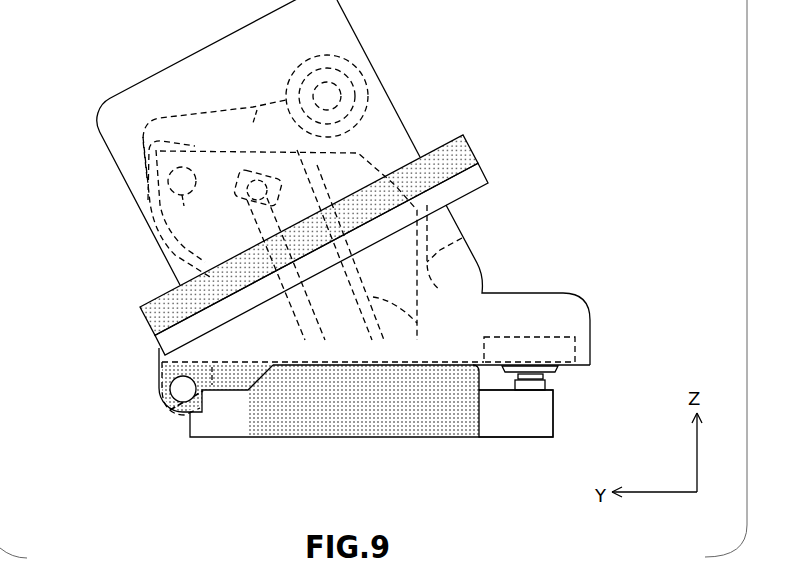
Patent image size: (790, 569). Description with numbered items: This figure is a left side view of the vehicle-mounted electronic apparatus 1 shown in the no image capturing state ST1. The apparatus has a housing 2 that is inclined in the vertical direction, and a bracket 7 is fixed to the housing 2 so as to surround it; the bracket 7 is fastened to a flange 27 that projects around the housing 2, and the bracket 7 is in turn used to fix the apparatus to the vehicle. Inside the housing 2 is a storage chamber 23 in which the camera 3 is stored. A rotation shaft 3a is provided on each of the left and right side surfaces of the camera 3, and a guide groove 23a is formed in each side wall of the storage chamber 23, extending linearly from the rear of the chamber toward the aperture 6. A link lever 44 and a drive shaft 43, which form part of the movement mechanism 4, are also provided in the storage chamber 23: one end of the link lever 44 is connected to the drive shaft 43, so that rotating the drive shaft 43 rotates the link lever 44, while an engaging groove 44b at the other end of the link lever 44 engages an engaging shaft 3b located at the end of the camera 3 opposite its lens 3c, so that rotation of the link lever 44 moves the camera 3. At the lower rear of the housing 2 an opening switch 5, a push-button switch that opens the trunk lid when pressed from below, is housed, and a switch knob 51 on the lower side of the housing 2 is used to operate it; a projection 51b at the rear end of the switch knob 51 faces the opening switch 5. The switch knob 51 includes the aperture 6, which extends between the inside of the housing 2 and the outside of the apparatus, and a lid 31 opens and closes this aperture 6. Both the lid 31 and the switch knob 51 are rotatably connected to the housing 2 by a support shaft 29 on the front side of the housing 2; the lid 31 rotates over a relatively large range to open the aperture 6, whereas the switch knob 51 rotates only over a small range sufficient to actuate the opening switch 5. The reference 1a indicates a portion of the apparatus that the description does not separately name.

The no image capturing state ST1 is at (97, 50).
The vehicle-mounted electronic apparatus 1 is at (518, 65).
The apparatus body lower portion 1a is at (540, 480).
The housing 2 is at (228, 35).
The camera 3 is at (420, 323).
The rotation shaft 3a is at (247, 201).
The engaging shaft 3b is at (176, 207).
The lens 3c is at (462, 238).
The movement mechanism 4 is at (350, 55).
The opening switch 5 is at (538, 337).
The aperture 6 is at (337, 438).
The bracket 7 is at (466, 155).
The storage chamber 23 is at (222, 86).
The guide groove 23a is at (302, 200).
The flange 27 is at (476, 180).
The support shaft 29 is at (182, 397).
The lid 31 is at (380, 380).
The drive shaft 43 is at (340, 99).
The link lever 44 is at (257, 110).
The engaging groove 44b is at (170, 145).
The switch knob 51 is at (533, 418).
The projection 51b is at (545, 383).